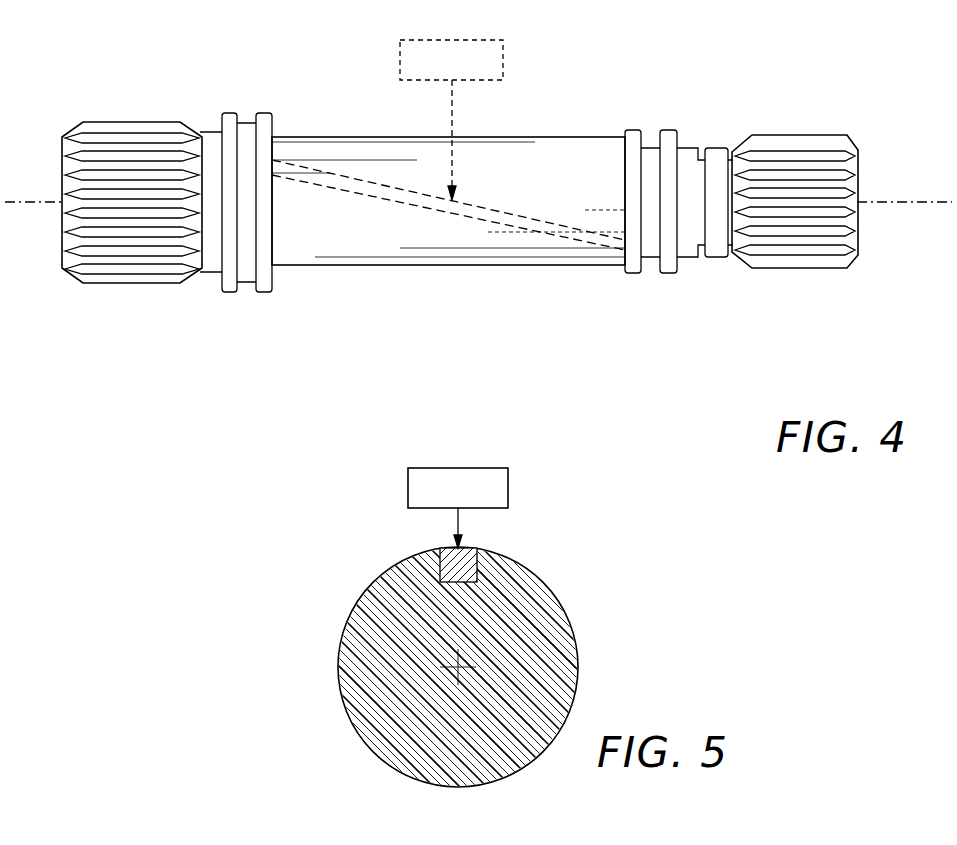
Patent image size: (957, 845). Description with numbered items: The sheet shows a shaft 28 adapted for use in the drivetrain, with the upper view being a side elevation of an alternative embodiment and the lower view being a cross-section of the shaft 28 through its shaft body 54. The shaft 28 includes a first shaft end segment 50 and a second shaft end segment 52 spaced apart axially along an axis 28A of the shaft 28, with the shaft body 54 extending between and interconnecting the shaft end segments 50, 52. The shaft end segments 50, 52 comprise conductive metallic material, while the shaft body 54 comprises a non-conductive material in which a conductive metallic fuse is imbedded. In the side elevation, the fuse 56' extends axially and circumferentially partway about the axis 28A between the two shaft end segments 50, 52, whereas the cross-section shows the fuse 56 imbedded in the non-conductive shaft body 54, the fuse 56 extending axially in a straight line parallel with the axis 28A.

In FIG. 4, the shaft 28 is at (141, 83).
In FIG. 5, the shaft 28 is at (325, 509).
In FIG. 4, the axis 28A is at (52, 200).
In FIG. 5, the axis 28A is at (464, 662).
In FIG. 4, the first shaft end segment 50 is at (129, 298).
In FIG. 4, the second shaft end segment 52 is at (788, 300).
In FIG. 4, the shaft body 54 is at (369, 292).
In FIG. 5, the shaft body 54 is at (347, 610).
In FIG. 5, the fuse 56 is at (485, 504).
In FIG. 4, the fuse 56' is at (482, 100).